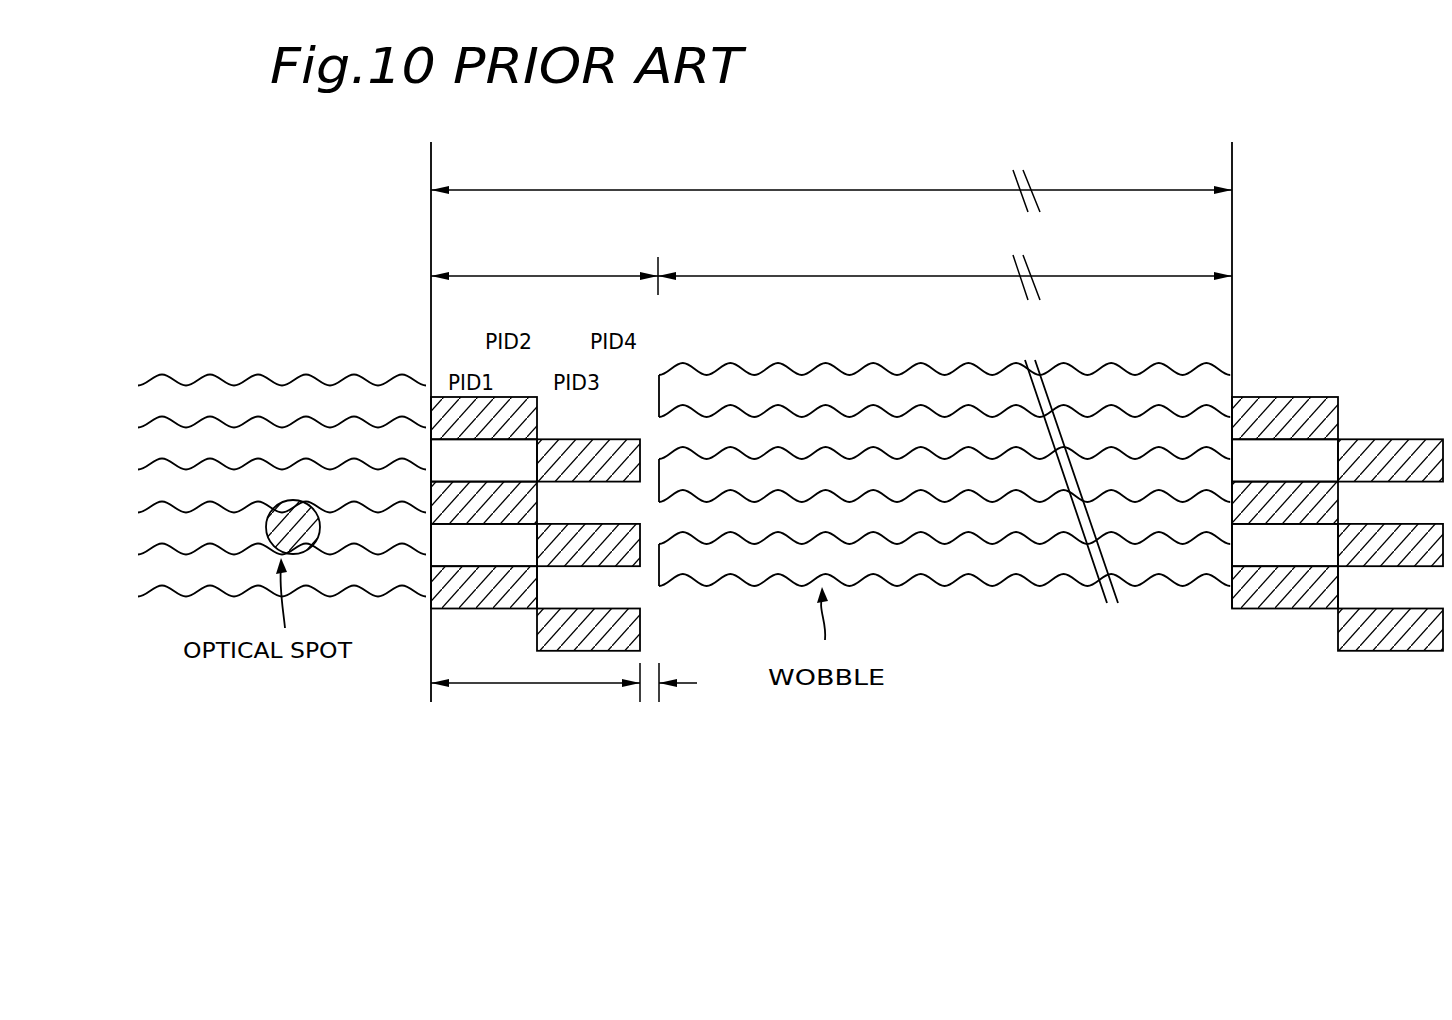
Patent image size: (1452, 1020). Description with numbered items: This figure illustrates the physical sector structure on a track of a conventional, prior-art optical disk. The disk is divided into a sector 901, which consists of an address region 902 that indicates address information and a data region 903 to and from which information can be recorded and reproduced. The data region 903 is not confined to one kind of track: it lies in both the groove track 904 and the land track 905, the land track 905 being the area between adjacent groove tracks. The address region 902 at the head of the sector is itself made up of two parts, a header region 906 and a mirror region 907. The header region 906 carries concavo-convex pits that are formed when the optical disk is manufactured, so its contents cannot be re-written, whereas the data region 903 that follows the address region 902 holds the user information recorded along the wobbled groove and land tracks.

The sector 901 is at (758, 190).
The address region 902 is at (502, 275).
The data region 903 is at (851, 276).
The groove track 904 is at (765, 398).
The land track 905 is at (1011, 428).
The header region 906 is at (505, 685).
The mirror region 907 is at (650, 687).